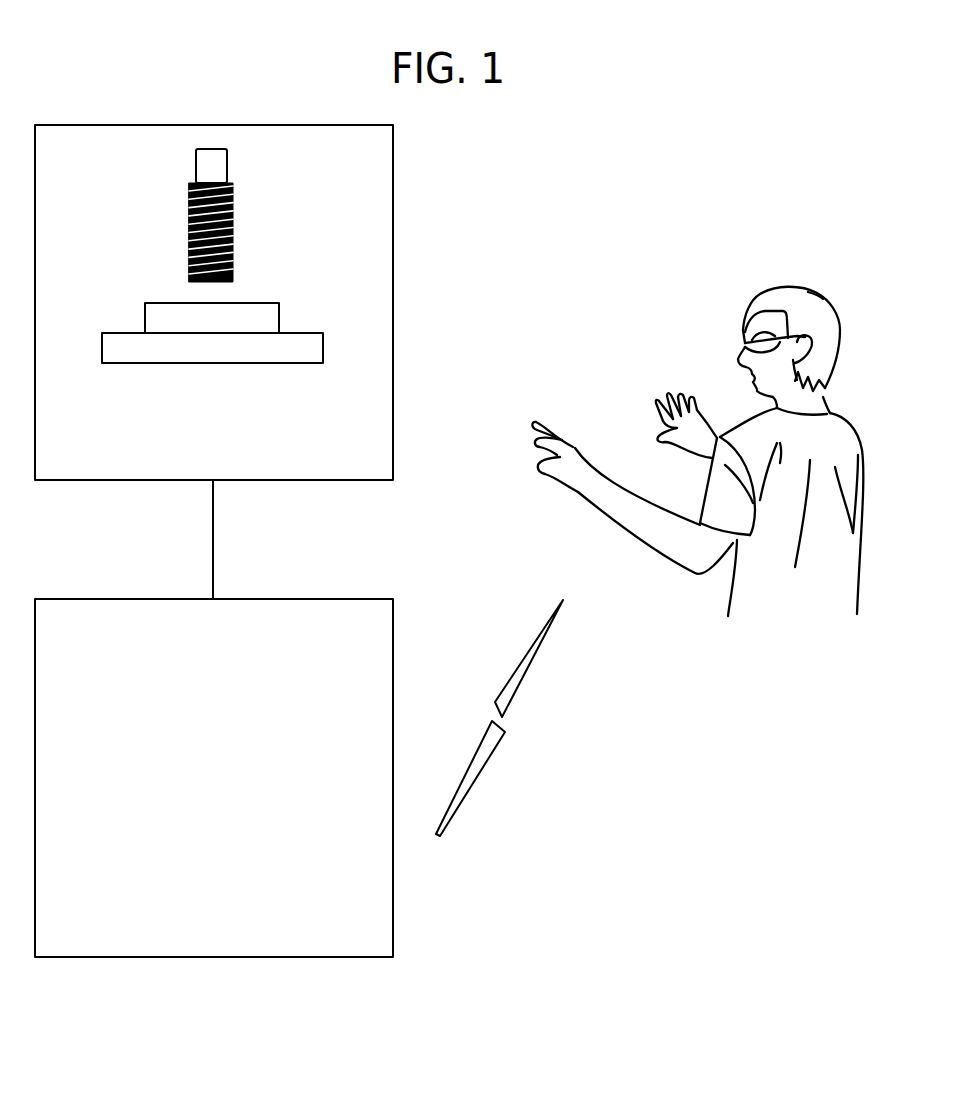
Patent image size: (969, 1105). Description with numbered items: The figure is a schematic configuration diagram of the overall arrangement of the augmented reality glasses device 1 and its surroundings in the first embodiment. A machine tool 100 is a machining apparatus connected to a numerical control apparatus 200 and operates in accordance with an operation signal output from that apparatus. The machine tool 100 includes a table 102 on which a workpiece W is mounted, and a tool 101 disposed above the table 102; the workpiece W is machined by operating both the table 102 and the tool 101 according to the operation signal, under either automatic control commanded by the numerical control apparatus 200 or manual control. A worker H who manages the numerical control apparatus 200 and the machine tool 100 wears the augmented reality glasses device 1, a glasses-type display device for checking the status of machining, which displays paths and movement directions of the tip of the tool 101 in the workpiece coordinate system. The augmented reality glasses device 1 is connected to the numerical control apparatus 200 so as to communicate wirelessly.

The machine tool 100 is at (214, 302).
The tool 101 is at (221, 170).
The table 102 is at (207, 355).
The workpiece W is at (155, 313).
The numerical control apparatus 200 is at (214, 778).
The worker H is at (697, 423).
The augmented reality glasses device 1 is at (742, 347).